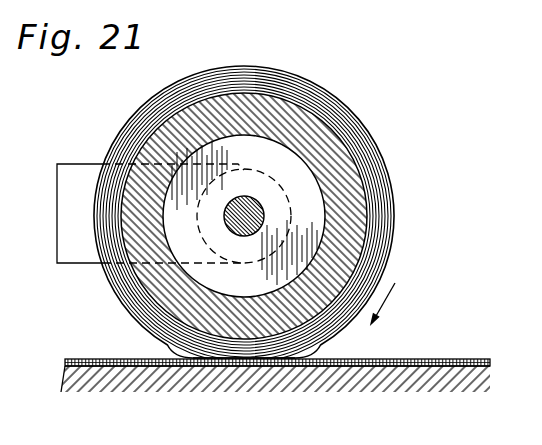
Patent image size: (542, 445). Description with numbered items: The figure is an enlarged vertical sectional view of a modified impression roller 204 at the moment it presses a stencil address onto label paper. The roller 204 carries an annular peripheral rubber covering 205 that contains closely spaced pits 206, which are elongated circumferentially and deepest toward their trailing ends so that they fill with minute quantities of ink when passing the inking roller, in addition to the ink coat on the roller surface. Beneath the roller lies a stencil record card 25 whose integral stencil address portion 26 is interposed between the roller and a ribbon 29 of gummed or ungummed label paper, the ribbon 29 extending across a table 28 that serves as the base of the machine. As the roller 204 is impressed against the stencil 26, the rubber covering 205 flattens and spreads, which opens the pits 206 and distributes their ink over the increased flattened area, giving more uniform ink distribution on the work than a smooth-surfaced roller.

The impression roller 204 is at (347, 187).
The rubber covering 205 is at (393, 210).
The pits 206 is at (405, 268).
The stencil record card 25 is at (452, 360).
The address portion 26 is at (302, 362).
The table 28 is at (275, 391).
The ribbon 29 is at (277, 394).